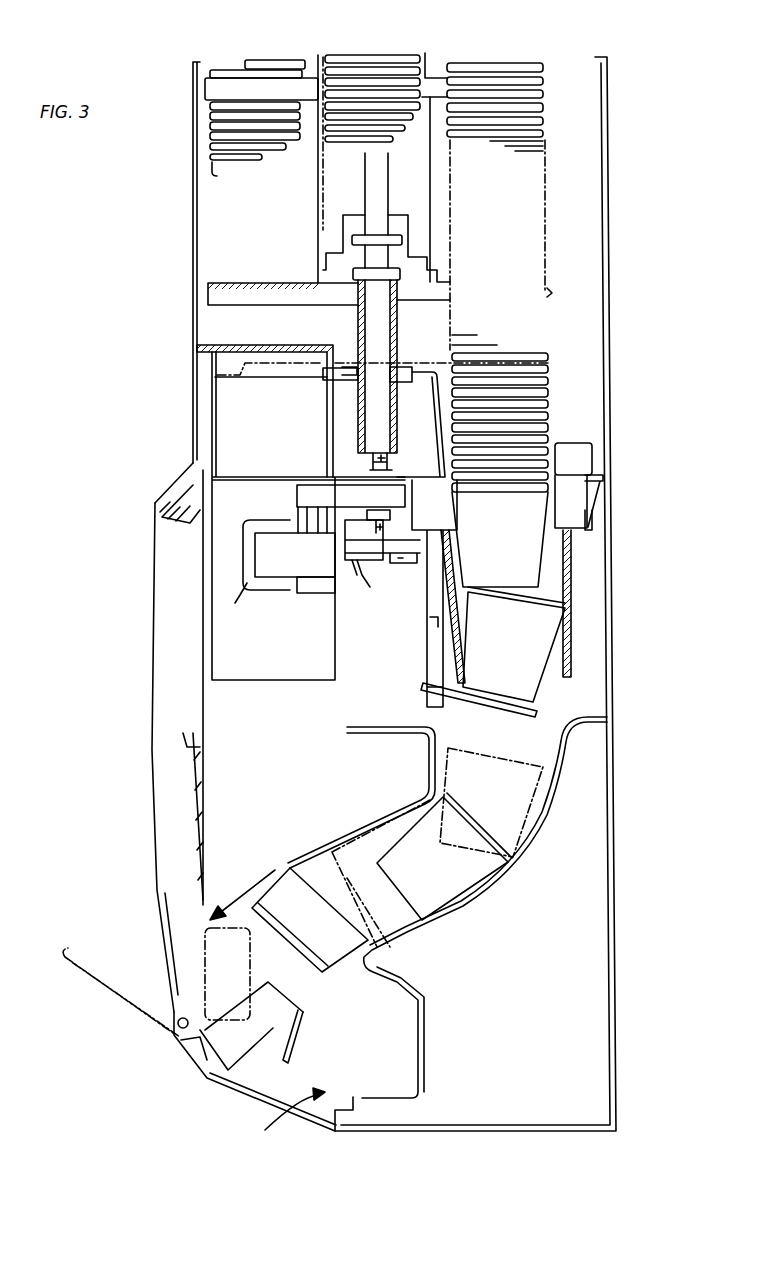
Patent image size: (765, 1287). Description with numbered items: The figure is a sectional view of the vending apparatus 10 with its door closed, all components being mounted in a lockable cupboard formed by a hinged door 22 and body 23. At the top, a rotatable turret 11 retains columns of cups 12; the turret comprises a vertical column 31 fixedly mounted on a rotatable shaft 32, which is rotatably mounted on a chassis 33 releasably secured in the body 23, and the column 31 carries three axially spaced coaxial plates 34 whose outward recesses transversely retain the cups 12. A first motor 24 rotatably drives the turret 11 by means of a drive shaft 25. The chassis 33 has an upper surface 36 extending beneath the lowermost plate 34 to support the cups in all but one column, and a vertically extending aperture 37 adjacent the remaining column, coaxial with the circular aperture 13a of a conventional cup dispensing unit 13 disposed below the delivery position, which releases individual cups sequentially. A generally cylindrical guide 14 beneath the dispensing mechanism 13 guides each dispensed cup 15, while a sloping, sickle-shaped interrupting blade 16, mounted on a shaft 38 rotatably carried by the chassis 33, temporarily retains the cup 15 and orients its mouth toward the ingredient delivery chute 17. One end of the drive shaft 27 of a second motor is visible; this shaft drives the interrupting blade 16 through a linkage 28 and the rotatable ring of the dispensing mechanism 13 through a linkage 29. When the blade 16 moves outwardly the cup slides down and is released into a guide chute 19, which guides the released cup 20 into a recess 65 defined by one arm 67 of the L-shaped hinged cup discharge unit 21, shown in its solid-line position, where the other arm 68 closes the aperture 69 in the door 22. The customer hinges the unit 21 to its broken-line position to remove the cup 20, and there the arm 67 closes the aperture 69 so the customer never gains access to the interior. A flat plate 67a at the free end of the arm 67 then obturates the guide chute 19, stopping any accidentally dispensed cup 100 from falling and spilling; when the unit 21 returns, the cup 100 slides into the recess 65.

The vending apparatus 10 is at (278, 1117).
The rotatable turret 11 is at (436, 62).
The columns of cups 12 is at (512, 70).
The cup dispensing unit 13 is at (568, 480).
The circular aperture 13a is at (550, 518).
The cylindrical guide 14 is at (572, 628).
The dispensed cup 15 is at (545, 652).
The interrupting blade 16 is at (535, 720).
The ingredient delivery chute 17 is at (603, 481).
The guide chute 19 is at (567, 795).
The released cup 20 is at (480, 877).
The hinged cup discharge unit 21 is at (161, 970).
The hinged door 22 is at (160, 862).
The body 23 is at (618, 958).
The first motor 24 is at (297, 496).
The drive shaft 25 is at (392, 470).
The drive shaft 27 is at (410, 519).
The linkage 28 is at (357, 583).
The linkage 29 is at (378, 545).
The vertical column 31 is at (318, 190).
The rotatable shaft 32 is at (385, 192).
The chassis 33 is at (345, 365).
The coaxial plates 34 is at (229, 86).
The upper surface 36 is at (416, 362).
The vertically extending aperture 37 is at (553, 440).
The shaft 38 is at (427, 658).
The recess 65 is at (262, 985).
The arm 67 is at (243, 1045).
The flat plate 67a is at (305, 1035).
The arm 68 is at (157, 903).
The aperture 69 is at (242, 895).
The cup 100 is at (282, 892).